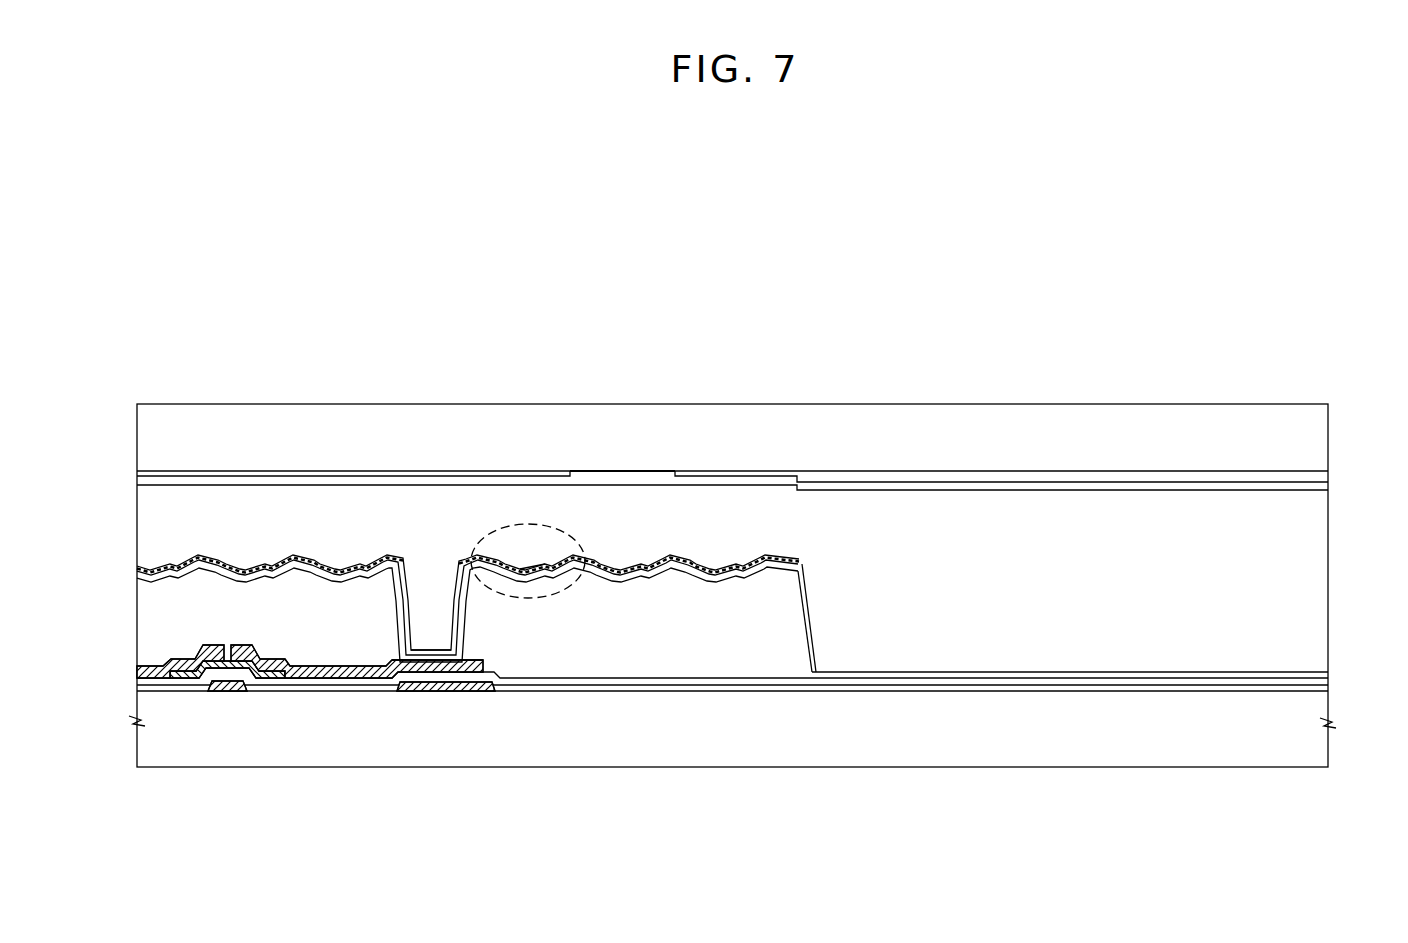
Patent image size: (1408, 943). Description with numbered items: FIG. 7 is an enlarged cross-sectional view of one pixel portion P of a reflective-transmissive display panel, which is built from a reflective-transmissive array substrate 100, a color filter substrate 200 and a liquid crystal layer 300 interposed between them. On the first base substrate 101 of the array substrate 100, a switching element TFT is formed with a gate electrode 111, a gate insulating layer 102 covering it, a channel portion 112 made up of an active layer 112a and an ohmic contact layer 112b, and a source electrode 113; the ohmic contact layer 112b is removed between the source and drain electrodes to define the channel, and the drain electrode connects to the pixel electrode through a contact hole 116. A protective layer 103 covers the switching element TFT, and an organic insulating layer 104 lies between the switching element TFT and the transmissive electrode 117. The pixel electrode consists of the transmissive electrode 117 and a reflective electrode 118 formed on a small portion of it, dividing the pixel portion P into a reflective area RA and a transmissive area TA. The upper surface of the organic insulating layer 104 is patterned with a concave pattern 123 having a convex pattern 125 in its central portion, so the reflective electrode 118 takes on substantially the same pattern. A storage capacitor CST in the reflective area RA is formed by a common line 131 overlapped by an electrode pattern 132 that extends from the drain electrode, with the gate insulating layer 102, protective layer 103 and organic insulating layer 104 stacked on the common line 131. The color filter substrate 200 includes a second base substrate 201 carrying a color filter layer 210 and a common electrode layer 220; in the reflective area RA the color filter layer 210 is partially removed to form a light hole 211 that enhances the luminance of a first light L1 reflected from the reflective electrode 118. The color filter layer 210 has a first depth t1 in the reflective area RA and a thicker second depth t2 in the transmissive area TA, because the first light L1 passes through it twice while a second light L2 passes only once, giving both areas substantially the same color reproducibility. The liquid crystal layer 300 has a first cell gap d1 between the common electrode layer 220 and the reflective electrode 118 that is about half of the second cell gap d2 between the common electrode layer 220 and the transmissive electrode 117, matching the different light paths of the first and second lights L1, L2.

The reflective-transmissive array substrate 100 is at (1336, 677).
The first base substrate 101 is at (138, 718).
The gate insulating layer 102 is at (138, 685).
The protective layer 103 is at (138, 670).
The organic insulating layer 104 is at (140, 606).
The gate electrode 111 is at (212, 694).
The channel portion 112 is at (310, 757).
The active layer 112a is at (248, 693).
The ohmic contact layer 112b is at (268, 692).
The source electrode 113 is at (153, 695).
The contact hole 116 is at (421, 597).
The transmissive electrode 117 is at (138, 572).
The reflective electrode 118 is at (138, 562).
The concave pattern 123 is at (575, 536).
The convex pattern 125 is at (533, 569).
The common line 131 is at (440, 692).
The electrode pattern 132 is at (373, 680).
The color filter substrate 200 is at (1336, 404).
The second base substrate 201 is at (142, 423).
The color filter layer 210 is at (138, 472).
The light hole 211 is at (616, 470).
The common electrode layer 220 is at (138, 484).
The liquid crystal layer 300 is at (1336, 492).
The switching element TFT is at (145, 869).
The storage capacitor CST is at (360, 826).
The pixel portion P is at (1328, 248).
The reflective area RA is at (137, 337).
The transmissive area TA is at (803, 283).
The first light L1 is at (320, 563).
The second light L2 is at (1103, 788).
The first cell gap d1 is at (198, 491).
The second cell gap d2 is at (1208, 491).
The first depth t1 is at (517, 499).
The second depth t2 is at (895, 504).